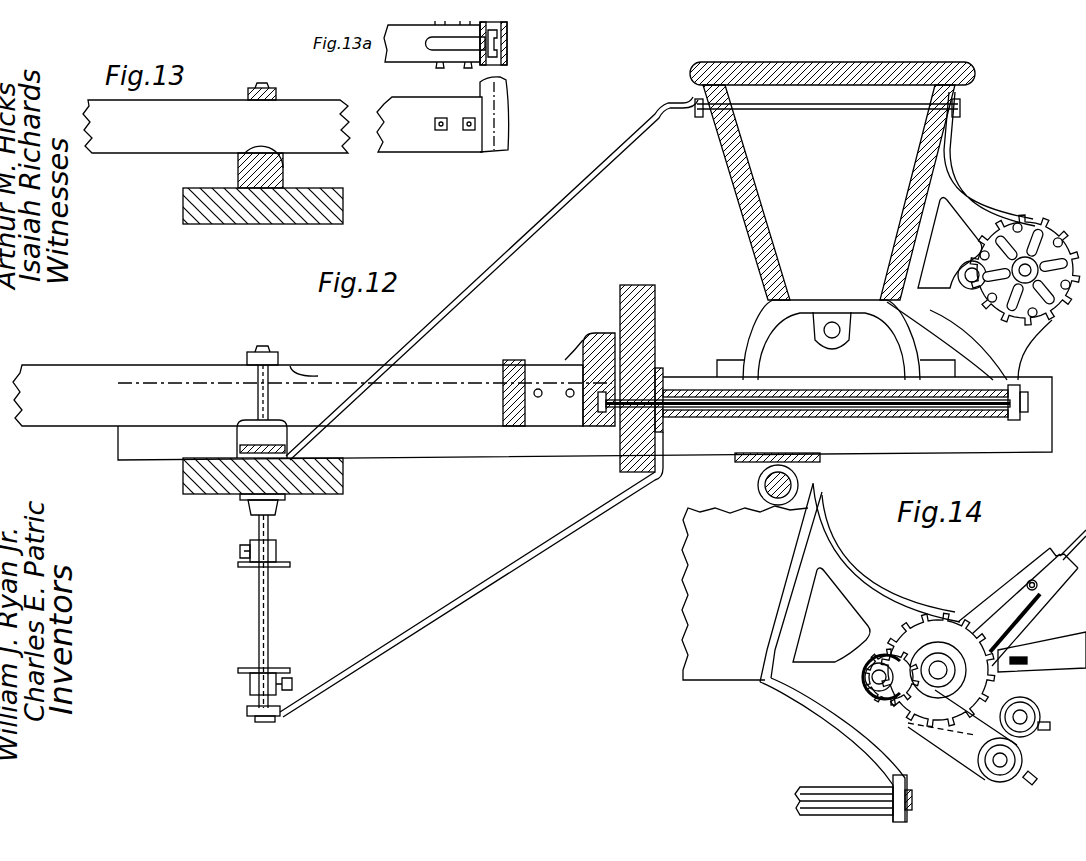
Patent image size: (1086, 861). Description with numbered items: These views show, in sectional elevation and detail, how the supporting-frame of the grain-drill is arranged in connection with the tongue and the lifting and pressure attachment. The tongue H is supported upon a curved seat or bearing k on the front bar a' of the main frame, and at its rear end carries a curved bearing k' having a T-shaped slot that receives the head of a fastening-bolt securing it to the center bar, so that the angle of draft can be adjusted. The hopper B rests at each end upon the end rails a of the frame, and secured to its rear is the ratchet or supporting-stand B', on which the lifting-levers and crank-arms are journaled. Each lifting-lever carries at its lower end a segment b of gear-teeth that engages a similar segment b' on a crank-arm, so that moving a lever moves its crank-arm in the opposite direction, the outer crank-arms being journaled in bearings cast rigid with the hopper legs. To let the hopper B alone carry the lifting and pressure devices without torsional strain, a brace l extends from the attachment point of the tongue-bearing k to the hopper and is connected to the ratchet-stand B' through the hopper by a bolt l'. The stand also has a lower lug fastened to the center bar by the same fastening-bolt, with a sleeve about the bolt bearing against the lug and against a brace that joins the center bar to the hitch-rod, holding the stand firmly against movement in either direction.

In FIG. 13, the tongue H is at (216, 126).
In FIG. 12, the tongue H is at (298, 395).
In FIG. 13, the curved seat or bearing k is at (228, 167).
In FIG. 13, the front bar a' is at (263, 218).
In FIG. 13A, the curved bearing k' is at (457, 108).
In FIG. 12, the curved bearing k' is at (535, 372).
In FIG. 12, the end rails a is at (585, 418).
In FIG. 12, the brace l is at (679, 278).
In FIG. 12, the bolt l' is at (827, 121).
In FIG. 12, the hopper B is at (832, 221).
In FIG. 14, the hopper B is at (745, 593).
In FIG. 12, the ratchet or supporting-stand B' is at (999, 236).
In FIG. 14, the ratchet or supporting-stand B' is at (860, 652).
In FIG. 14, the segment of gear-teeth b is at (937, 669).
In FIG. 14, the segment of gear-teeth b' is at (891, 662).